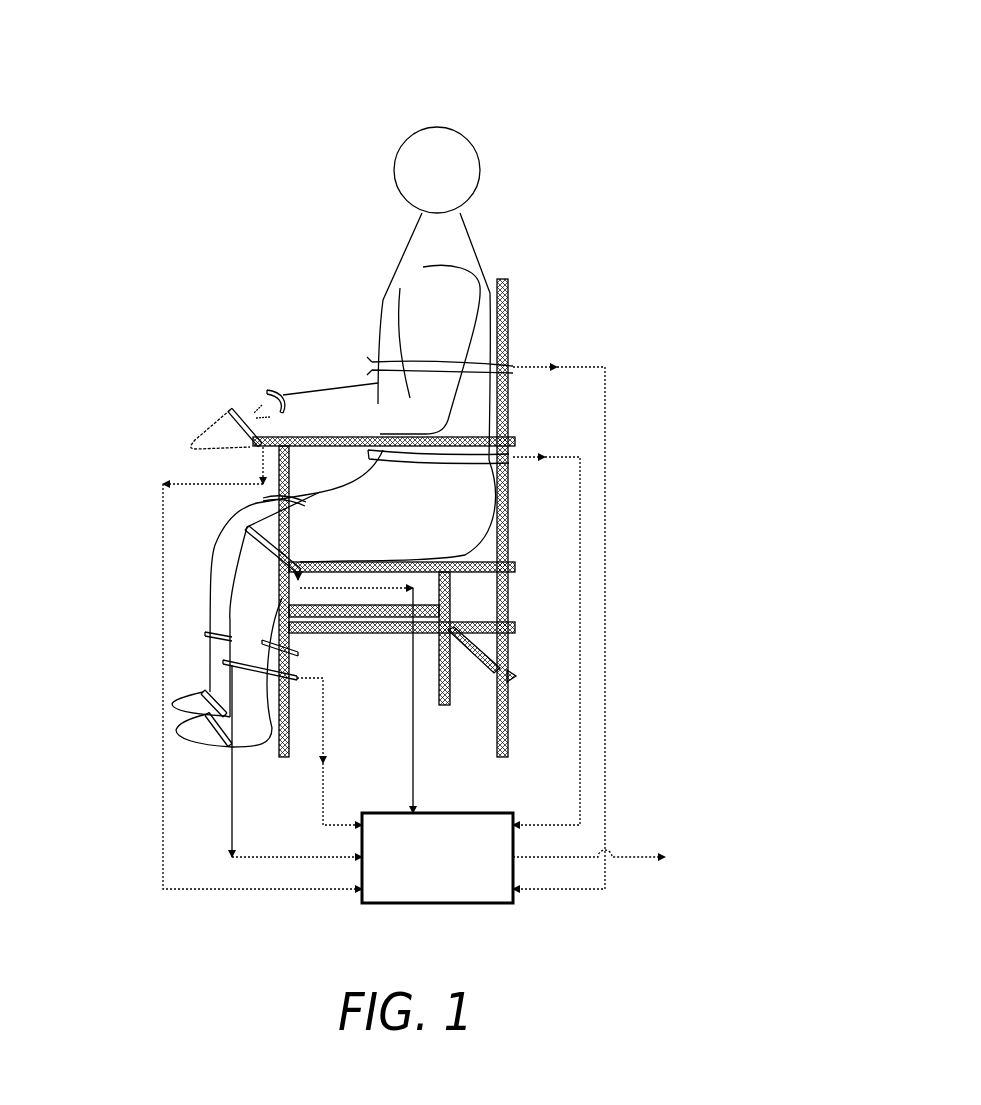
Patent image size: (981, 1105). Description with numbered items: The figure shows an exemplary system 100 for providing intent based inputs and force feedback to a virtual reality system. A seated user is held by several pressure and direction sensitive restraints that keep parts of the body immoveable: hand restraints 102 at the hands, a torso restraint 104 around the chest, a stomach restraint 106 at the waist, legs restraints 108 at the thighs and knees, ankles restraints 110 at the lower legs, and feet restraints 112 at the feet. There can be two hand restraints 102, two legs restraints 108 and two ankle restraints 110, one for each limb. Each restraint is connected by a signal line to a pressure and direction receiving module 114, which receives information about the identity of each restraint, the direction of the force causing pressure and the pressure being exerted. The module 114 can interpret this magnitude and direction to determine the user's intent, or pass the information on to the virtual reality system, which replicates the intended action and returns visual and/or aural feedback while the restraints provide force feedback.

The system 100 is at (147, 85).
The hand restraints 102 is at (230, 408).
The torso restraints 104 is at (513, 365).
The stomach restraints 106 is at (513, 453).
The legs restraints 108 is at (263, 500).
The ankles restraints 110 is at (205, 636).
The feet restraints 112 is at (198, 692).
The pressure and direction receiving module 114 is at (437, 858).